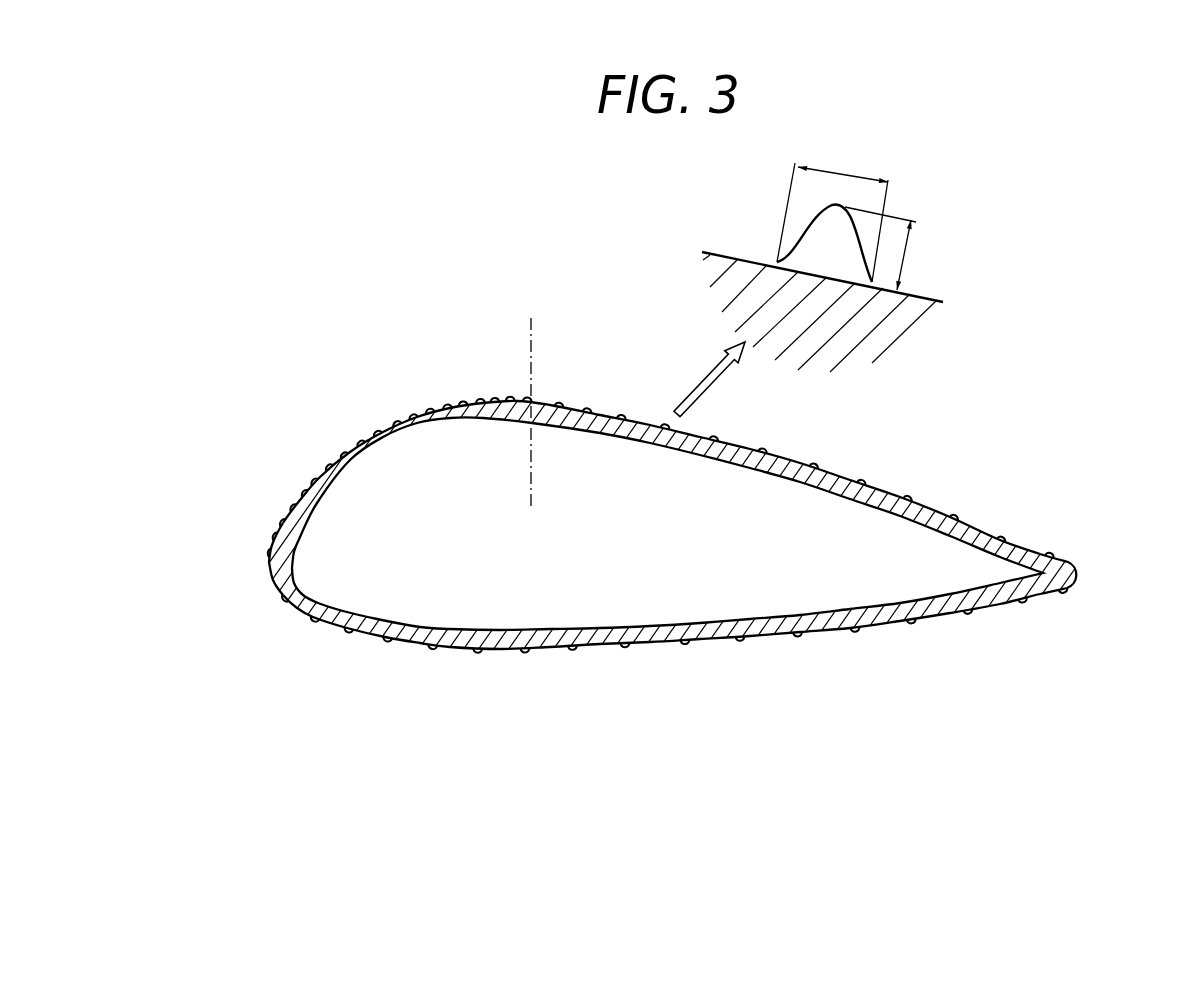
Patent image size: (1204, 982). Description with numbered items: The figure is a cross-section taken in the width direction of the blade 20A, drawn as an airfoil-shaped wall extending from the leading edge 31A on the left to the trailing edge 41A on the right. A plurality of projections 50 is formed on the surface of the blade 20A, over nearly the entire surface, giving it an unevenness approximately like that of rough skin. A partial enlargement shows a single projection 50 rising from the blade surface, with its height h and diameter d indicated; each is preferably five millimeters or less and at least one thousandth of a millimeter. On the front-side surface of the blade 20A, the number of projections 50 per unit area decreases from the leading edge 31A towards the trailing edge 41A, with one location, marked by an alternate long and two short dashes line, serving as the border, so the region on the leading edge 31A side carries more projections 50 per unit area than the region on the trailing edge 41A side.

The blade 20A is at (906, 455).
The leading edge 31A is at (268, 563).
The trailing edge 41A is at (1086, 571).
The projection 50 is at (379, 434).